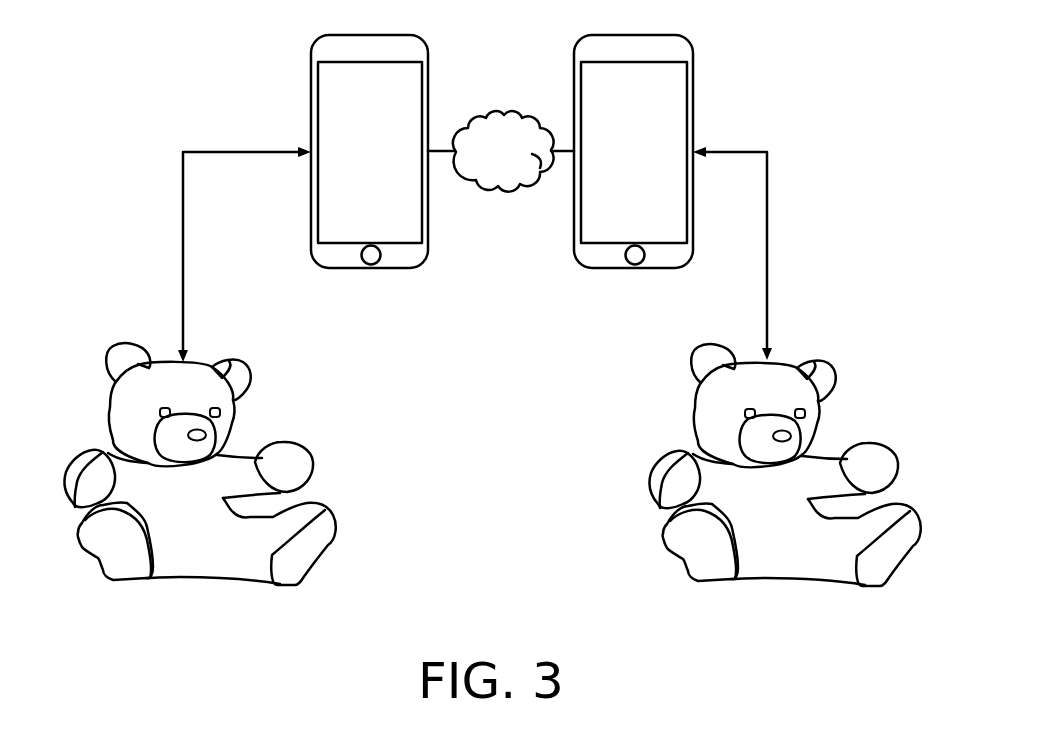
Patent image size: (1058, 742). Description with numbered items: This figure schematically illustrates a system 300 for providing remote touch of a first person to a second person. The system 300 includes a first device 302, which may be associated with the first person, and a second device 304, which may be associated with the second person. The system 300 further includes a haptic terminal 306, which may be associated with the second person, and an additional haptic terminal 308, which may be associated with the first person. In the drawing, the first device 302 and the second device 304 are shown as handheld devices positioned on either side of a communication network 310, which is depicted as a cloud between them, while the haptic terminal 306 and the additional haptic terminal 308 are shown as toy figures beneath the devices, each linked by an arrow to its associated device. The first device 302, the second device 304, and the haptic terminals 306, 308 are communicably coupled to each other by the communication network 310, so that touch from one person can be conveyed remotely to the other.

The system 300 is at (826, 44).
The first device 302 is at (346, 158).
The second device 304 is at (610, 158).
The haptic terminal 306 is at (825, 378).
The additional haptic terminal 308 is at (287, 465).
The communication network 310 is at (527, 164).